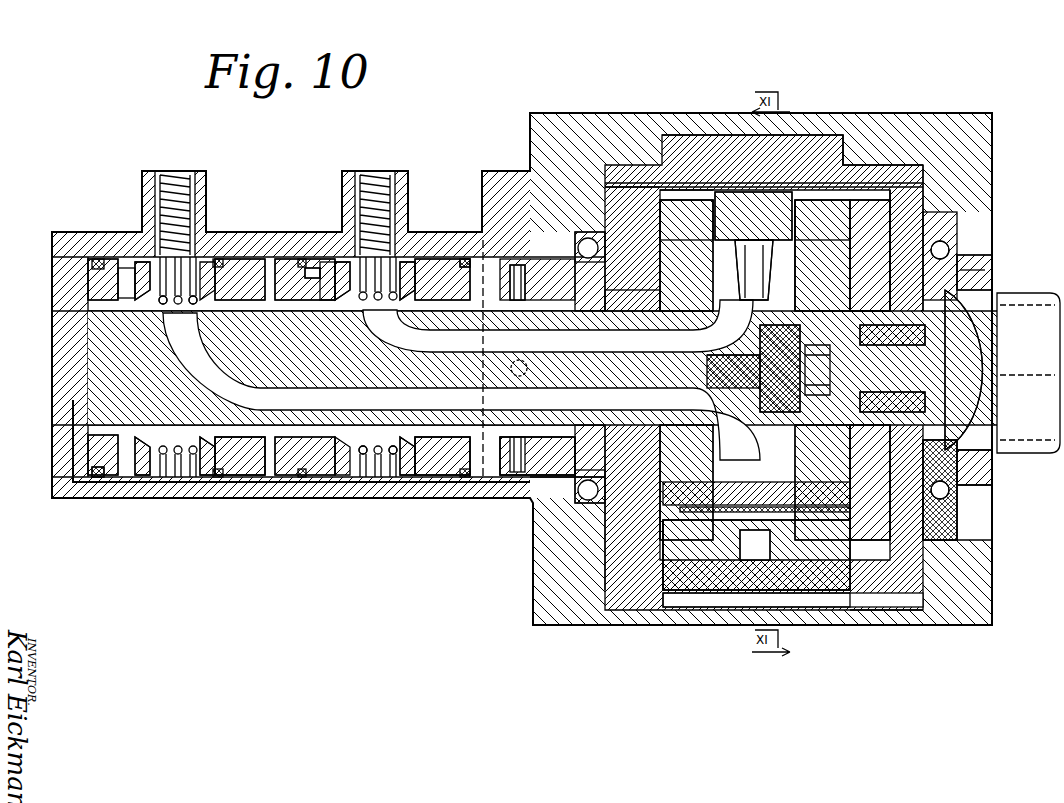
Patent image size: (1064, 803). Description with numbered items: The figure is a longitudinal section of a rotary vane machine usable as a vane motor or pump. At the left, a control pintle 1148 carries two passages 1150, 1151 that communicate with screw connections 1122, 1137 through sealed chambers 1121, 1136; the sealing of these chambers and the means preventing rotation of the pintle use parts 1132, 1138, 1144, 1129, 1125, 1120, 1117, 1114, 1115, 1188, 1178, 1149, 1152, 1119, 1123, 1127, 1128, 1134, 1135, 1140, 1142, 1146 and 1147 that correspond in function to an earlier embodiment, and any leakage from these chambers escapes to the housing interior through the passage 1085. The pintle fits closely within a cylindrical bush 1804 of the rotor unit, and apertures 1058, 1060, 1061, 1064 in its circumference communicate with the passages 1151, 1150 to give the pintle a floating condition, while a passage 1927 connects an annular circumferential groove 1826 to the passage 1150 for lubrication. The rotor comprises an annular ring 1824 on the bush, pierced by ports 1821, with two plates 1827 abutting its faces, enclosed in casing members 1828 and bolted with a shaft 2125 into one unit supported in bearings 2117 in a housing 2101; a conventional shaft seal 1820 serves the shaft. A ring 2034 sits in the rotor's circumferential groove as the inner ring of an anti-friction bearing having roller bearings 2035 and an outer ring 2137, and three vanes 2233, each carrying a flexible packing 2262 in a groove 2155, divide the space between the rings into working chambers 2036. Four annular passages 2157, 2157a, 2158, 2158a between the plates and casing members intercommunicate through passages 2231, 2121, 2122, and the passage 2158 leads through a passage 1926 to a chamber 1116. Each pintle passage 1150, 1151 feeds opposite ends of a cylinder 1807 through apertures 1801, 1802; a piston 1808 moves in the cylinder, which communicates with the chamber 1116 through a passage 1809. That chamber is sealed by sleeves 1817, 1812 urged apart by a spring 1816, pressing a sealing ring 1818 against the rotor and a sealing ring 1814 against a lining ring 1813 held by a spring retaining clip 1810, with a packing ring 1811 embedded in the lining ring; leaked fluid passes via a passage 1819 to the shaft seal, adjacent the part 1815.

The part corresponding to part 132 of FIG. 7 1132 is at (178, 262).
The screw connection 1137 is at (145, 262).
The chamber 1136 is at (122, 268).
The part corresponding to part 138 of FIG. 7 1138 is at (170, 290).
The part corresponding to part 144 of FIG. 7 1144 is at (108, 262).
The part corresponding to part 129 of FIG. 7 1129 is at (222, 270).
The chamber 1121 is at (330, 262).
The part corresponding to part 125 of FIG. 7 1125 is at (320, 268).
The valve seat 1120 is at (365, 262).
The screw connection 1122 is at (380, 295).
The part corresponding to part 117 of FIG. 7 1117 is at (405, 262).
The part corresponding to part 114 of FIG. 7 1114 is at (437, 270).
The part corresponding to part 115 of FIG. 7 1115 is at (517, 272).
The part corresponding to part 188 of FIG. 7 1188 is at (458, 260).
The cylindrical bush 1804 is at (590, 225).
The aperture 1060 is at (625, 300).
The annular passage 2157a is at (640, 225).
The annular passage 2158a is at (622, 200).
The ports 1821 is at (690, 270).
The plates 1827 is at (673, 225).
The working chambers 2036 is at (740, 250).
The roller bearings 2035 is at (760, 215).
The ring 2034 is at (800, 235).
The annular ring 1824 is at (850, 210).
The housing 2101 is at (878, 137).
The annular passage 2157 is at (905, 170).
The aperture 1058 is at (955, 150).
The outer ring 2137 is at (880, 135).
The casing members 1828 is at (860, 222).
The annular passage 2158 is at (805, 220).
The bearings 2117 is at (880, 235).
The shaft seal 1820 is at (935, 245).
The spring 1816 is at (965, 262).
The shaft 2125 is at (975, 280).
The passage 1819 is at (967, 292).
The passage 1809 is at (915, 395).
The passage 2231 is at (700, 400).
The aperture 1801 is at (760, 360).
The flange 1815 is at (968, 455).
The sealing sleeve 1817 is at (960, 470).
The sealing ring 1818 is at (963, 485).
The chamber 1116 is at (945, 480).
The sealing sleeve 1812 is at (952, 505).
The sealing ring 1814 is at (965, 520).
The lining ring 1813 is at (975, 540).
The packing ring 1811 is at (980, 560).
The spring retaining clip 1810 is at (915, 560).
The cylinder 1807 is at (880, 462).
The passage 1926 is at (966, 590).
The piston 1808 is at (885, 510).
The vanes 2233 is at (850, 520).
The flexible packing 2262 is at (803, 560).
The aperture 1061 is at (855, 585).
The groove 2155 is at (820, 628).
The passage 2122 is at (903, 627).
The aperture 1802 is at (755, 545).
The aperture 1064 is at (690, 595).
The passage 1151 is at (630, 540).
The passage 2121 is at (663, 555).
The annular circumferential groove 1826 is at (588, 535).
The control pintle 1148 is at (555, 475).
The passage 1150 is at (540, 498).
The part corresponding to part 178 of FIG. 7 1178 is at (530, 462).
The passage 1927 is at (600, 545).
The part corresponding to part 149 of FIG. 7 1149 is at (505, 478).
The part corresponding to part 152 of FIG. 7 1152 is at (470, 478).
The part corresponding to part 119 of FIG. 7 1119 is at (437, 478).
The part corresponding to part 123 of FIG. 7 1123 is at (405, 478).
The part corresponding to part 127 of FIG. 7 1127 is at (372, 478).
The part corresponding to part 128 of FIG. 7 1128 is at (335, 478).
The part corresponding to part 134 of FIG. 7 1134 is at (236, 478).
The part corresponding to part 135 of FIG. 7 1135 is at (262, 478).
The part corresponding to part 140 of FIG. 7 1140 is at (197, 478).
The part corresponding to part 142 of FIG. 7 1142 is at (147, 478).
The part corresponding to part 146 of FIG. 7 1146 is at (112, 478).
The part corresponding to part 147 of FIG. 7 1147 is at (100, 480).
The passage 1085 is at (82, 490).